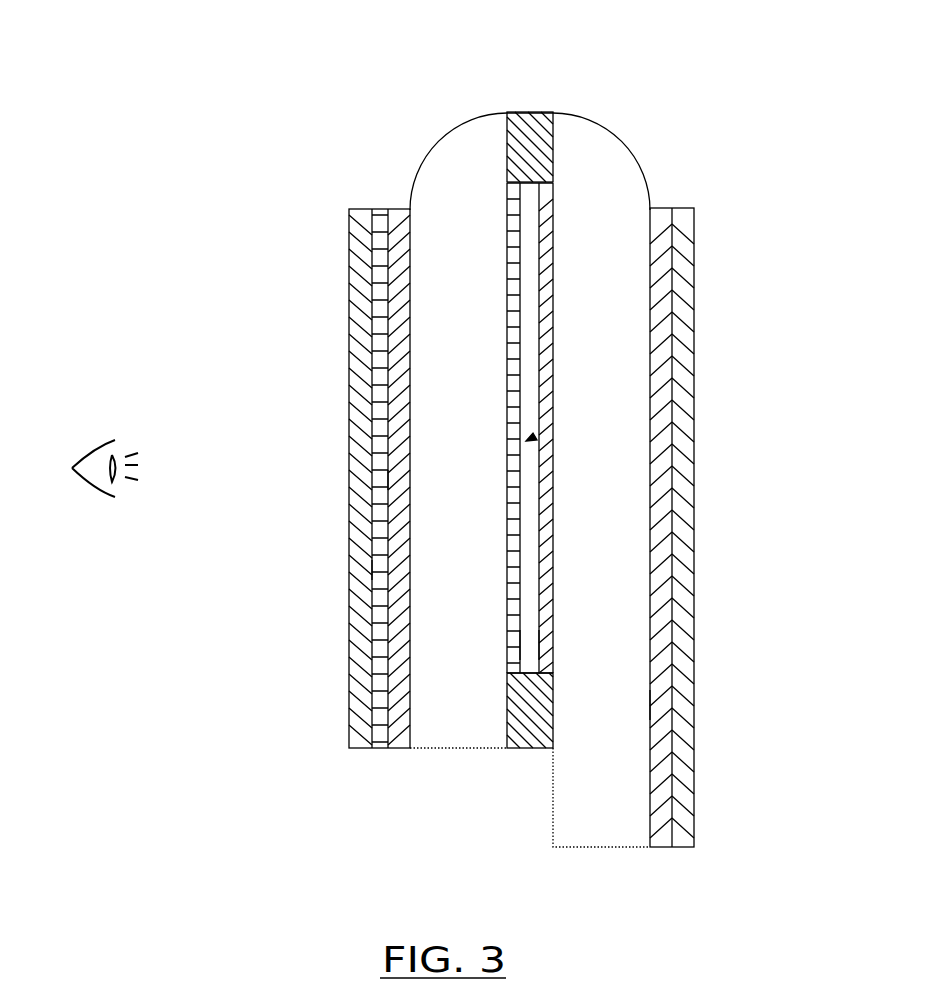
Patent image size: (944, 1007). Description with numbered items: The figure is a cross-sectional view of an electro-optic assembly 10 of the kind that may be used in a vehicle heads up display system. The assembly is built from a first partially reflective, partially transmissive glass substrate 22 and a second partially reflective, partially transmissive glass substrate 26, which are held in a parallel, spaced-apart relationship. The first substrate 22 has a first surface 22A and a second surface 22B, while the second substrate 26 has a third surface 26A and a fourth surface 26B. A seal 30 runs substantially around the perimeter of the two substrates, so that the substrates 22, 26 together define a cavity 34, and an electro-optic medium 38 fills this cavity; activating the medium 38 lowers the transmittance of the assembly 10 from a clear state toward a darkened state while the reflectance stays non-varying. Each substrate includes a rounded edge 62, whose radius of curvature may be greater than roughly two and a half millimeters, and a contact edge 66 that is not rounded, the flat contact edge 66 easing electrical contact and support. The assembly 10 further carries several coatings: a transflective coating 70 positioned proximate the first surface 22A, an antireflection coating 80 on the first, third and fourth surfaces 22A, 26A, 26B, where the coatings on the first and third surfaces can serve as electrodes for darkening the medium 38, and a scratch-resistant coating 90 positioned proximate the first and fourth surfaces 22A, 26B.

The electro-optic assembly 10 is at (708, 62).
The first partially reflective, partially transmissive glass substrate 22 is at (437, 363).
The first surface 22A is at (408, 478).
The second surface 22B is at (507, 597).
The second partially reflective, partially transmissive glass substrate 26 is at (625, 311).
The third surface 26A is at (555, 518).
The fourth surface 26B is at (652, 705).
The seal 30 is at (530, 112).
The cavity 34 is at (532, 437).
The electro-optic medium 38 is at (530, 641).
The rounded edge 62 is at (487, 111).
The contact edge 66 is at (537, 206).
The transflective coating 70 is at (505, 318).
The antireflection coating 80 is at (400, 223).
The scratch-resistant coating 90 is at (363, 227).